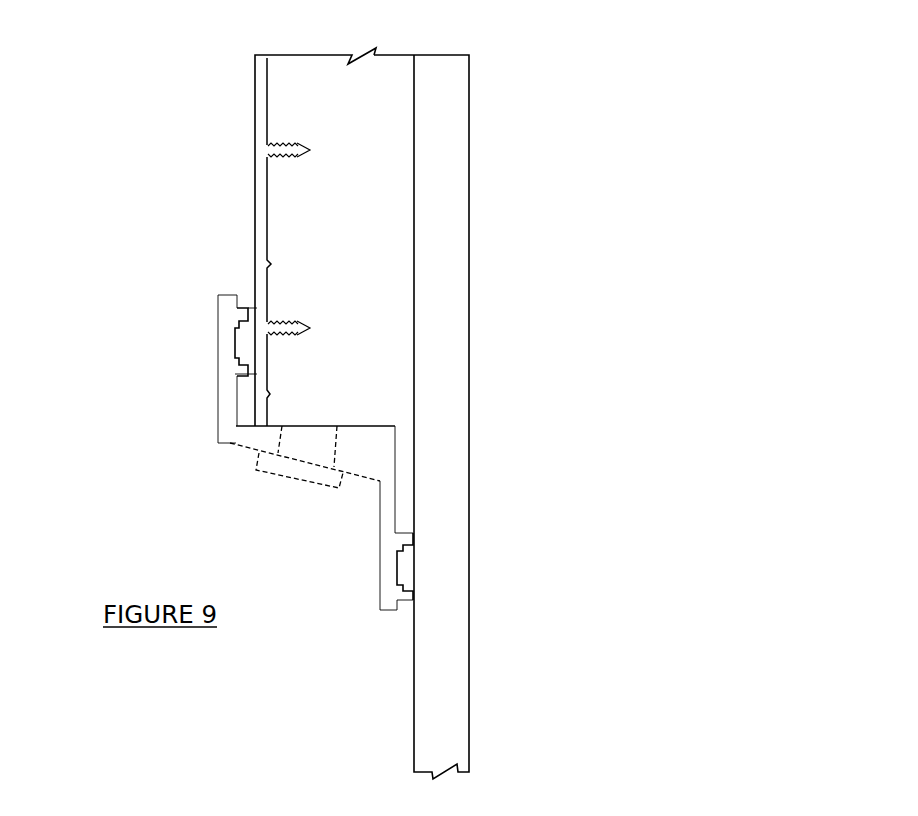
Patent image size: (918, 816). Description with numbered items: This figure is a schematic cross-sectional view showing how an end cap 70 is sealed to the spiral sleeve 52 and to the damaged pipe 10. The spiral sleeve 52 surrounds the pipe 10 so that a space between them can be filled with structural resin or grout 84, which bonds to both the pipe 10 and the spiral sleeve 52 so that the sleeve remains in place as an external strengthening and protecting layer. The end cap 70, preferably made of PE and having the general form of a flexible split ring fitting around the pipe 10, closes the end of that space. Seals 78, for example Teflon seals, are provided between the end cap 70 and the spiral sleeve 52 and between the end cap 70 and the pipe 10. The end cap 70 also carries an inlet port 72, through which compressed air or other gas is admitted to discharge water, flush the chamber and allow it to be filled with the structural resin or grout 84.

The pipe 10 is at (438, 177).
The spiral sleeve 52 is at (255, 66).
The structural resin or grout 84 is at (310, 217).
The seals 78 is at (235, 349).
The end cap 70 is at (236, 441).
The inlet port 72 is at (310, 440).